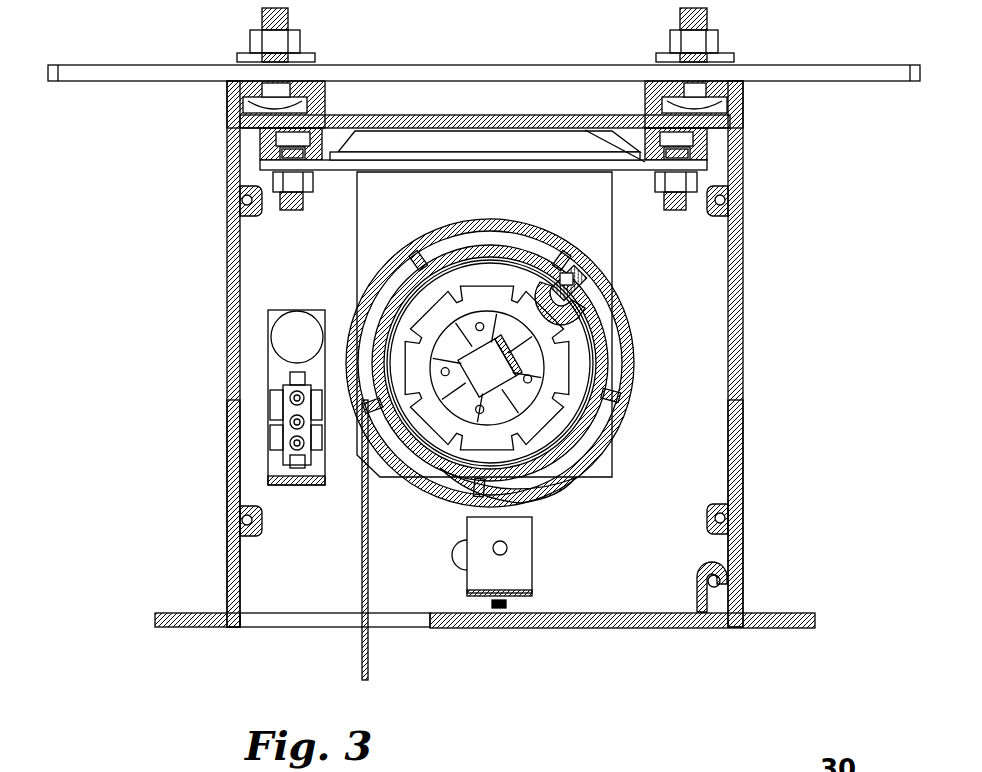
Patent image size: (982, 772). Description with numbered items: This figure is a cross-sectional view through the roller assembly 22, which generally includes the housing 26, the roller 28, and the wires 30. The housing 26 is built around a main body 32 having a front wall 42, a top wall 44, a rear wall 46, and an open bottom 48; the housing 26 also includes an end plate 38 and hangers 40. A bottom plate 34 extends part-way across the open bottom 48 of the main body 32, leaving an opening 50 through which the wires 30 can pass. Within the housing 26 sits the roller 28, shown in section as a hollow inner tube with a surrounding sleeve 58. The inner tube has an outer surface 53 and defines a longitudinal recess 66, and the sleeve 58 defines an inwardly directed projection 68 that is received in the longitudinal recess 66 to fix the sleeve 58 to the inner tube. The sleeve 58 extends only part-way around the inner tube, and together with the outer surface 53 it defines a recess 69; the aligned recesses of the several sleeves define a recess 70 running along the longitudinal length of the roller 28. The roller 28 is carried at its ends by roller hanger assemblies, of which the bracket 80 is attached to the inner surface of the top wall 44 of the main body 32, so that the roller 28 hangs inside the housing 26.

The roller assembly 22 is at (165, 373).
The housing 26 is at (226, 492).
The roller 28 is at (645, 373).
The wires 30 is at (372, 655).
The main body 32 is at (744, 483).
The bottom plate 34 is at (632, 620).
The end plate 38 is at (663, 466).
The hangers 40 is at (521, 72).
The front wall 42 is at (226, 276).
The top wall 44 is at (690, 170).
The rear wall 46 is at (744, 422).
The open bottom 48 is at (580, 592).
The opening 50 is at (282, 620).
The outer surface 53 is at (393, 443).
The sleeve 58 is at (348, 327).
The longitudinal recess 66 is at (600, 318).
The inwardly directed projection 68 is at (580, 290).
The recess 69 is at (425, 488).
The recess 70 is at (423, 497).
The bracket 80 is at (484, 324).